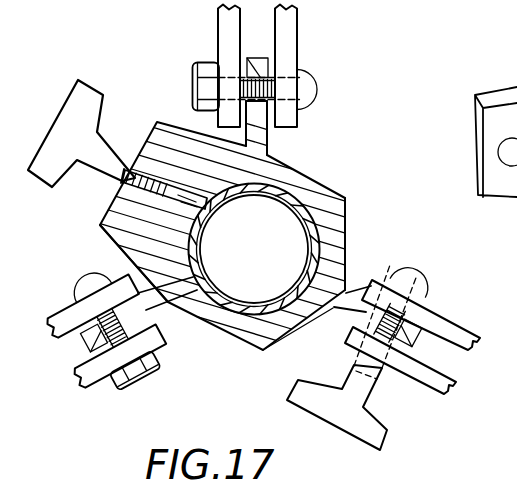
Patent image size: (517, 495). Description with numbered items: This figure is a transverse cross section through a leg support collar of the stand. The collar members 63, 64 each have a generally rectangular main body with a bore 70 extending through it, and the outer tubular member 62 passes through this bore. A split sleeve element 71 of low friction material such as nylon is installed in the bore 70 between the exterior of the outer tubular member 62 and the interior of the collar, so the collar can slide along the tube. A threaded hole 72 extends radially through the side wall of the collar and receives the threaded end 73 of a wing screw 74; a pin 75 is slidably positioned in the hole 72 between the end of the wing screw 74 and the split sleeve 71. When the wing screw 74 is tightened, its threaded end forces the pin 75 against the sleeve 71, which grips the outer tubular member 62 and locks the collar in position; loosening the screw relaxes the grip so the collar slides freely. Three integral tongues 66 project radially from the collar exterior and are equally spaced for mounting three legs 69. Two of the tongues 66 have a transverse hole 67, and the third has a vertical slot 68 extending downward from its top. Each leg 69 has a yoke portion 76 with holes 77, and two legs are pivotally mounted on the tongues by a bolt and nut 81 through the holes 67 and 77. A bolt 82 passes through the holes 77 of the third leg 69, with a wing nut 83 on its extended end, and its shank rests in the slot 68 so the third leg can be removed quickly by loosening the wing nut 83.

The outer tubular member 62 is at (234, 203).
The upper collar member 63 is at (264, 225).
The lower collar member 64 is at (395, 163).
The tongue 66 is at (262, 128).
The transverse hole 67 is at (254, 76).
The vertical slot 68 is at (418, 340).
The leg 69 is at (298, 40).
The bore 70 is at (342, 222).
The split sleeve element 71 is at (232, 318).
The threaded hole 72 is at (151, 180).
The threaded end 73 is at (120, 184).
The wing screw 74 is at (83, 103).
The pin 75 is at (102, 229).
The yoke portion 76 is at (212, 26).
The holes 77 is at (298, 70).
The bolt and nut 81 is at (205, 80).
The bolt 82 is at (424, 294).
The wing nut 83 is at (340, 420).